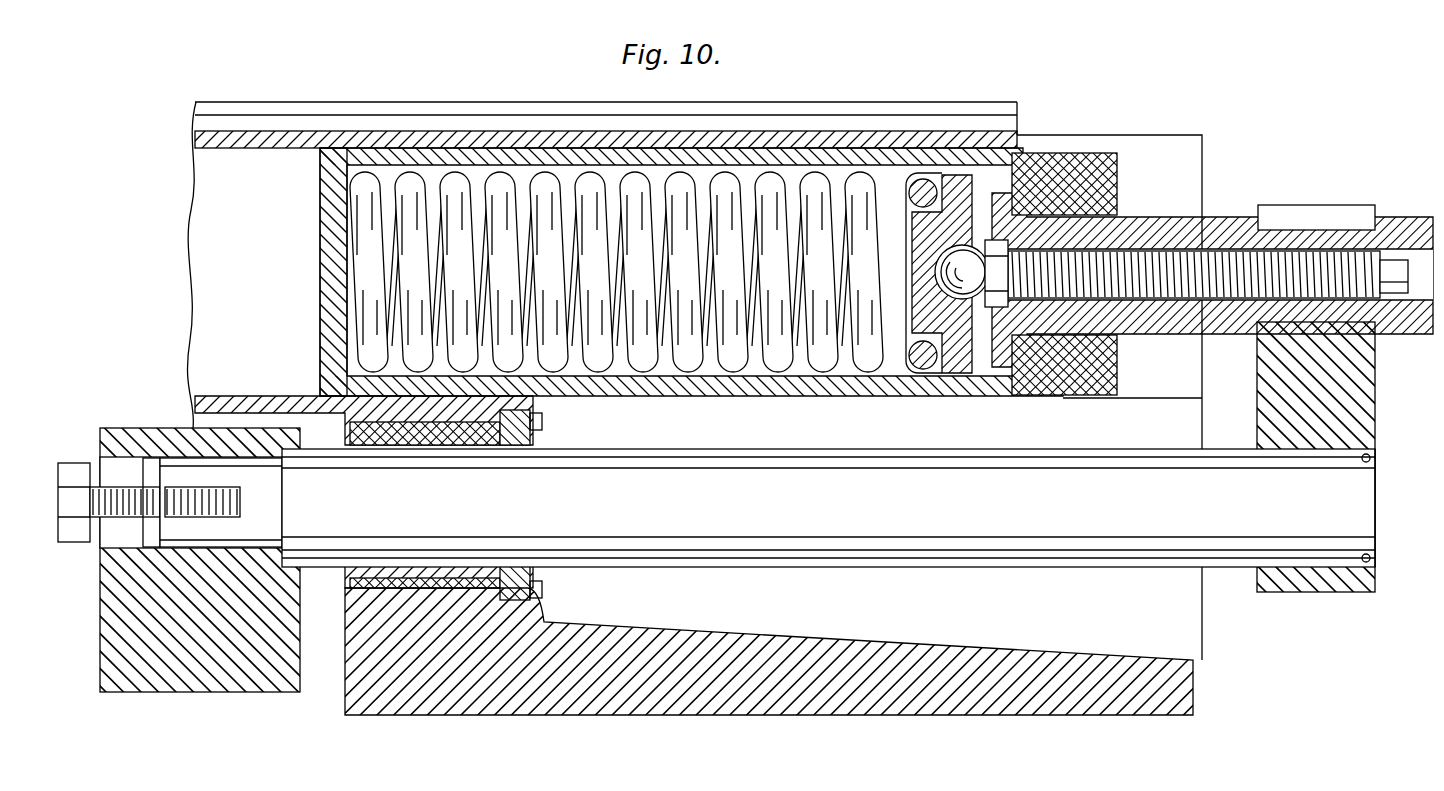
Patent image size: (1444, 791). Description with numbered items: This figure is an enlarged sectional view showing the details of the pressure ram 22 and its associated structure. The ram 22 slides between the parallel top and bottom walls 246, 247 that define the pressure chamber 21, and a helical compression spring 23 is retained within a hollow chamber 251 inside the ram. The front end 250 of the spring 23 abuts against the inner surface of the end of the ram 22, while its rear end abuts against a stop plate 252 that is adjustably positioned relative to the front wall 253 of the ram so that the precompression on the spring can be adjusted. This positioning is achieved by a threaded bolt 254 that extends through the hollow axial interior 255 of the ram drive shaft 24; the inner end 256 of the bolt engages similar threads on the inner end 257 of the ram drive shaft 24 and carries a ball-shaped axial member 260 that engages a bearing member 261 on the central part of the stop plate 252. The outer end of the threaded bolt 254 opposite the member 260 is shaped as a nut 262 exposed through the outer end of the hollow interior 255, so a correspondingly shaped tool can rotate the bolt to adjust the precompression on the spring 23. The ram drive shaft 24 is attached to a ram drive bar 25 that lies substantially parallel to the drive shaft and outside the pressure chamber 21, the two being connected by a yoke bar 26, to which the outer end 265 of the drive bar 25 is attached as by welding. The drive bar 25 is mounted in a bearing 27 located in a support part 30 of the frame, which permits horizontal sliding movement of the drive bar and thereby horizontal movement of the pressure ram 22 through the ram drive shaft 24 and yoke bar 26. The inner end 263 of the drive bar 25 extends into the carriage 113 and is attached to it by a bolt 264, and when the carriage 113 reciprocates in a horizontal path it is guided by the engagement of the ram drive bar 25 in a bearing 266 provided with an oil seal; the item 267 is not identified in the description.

The pressure chamber 21 is at (232, 222).
The pressure ram 22 is at (329, 311).
The helical compression spring 23 is at (698, 357).
The ram drive shaft 24 is at (1137, 218).
The ram drive bar 25 is at (1000, 512).
The yoke bar 26 is at (1362, 394).
The bearing 27 is at (462, 562).
The support part 30 is at (947, 665).
The carriage 113 is at (263, 682).
The top wall 246 is at (255, 142).
The bottom wall 247 is at (248, 398).
The front end of the spring 250 is at (562, 218).
The hollow chamber 251 is at (478, 172).
The stop plate 252 is at (958, 183).
The front wall of the ram 253 is at (325, 275).
The threaded bolt 254 is at (1209, 260).
The hollow axial interior 255 is at (1305, 257).
The inner end of the threaded bolt 256 is at (1032, 258).
The inner end of the ram drive shaft 257 is at (1053, 317).
The ball-shaped axial member 260 is at (948, 272).
The bearing member 261 is at (930, 248).
The nut 262 is at (1397, 262).
The inner end of the drive bar 263 is at (233, 477).
The bolt 264 is at (73, 473).
The outer end of the ram drive bar 265 is at (1285, 514).
The bearing 266 is at (433, 440).
The screw 267 is at (512, 445).